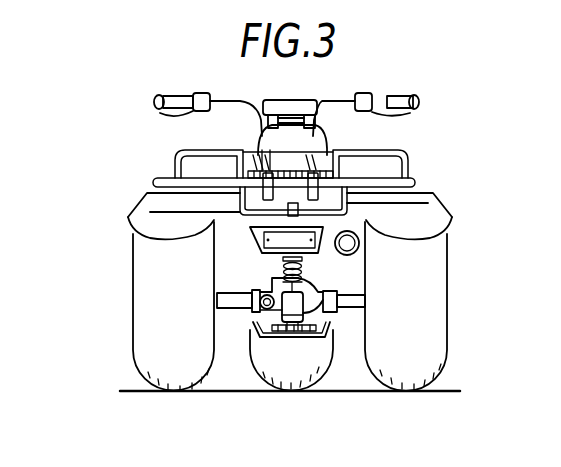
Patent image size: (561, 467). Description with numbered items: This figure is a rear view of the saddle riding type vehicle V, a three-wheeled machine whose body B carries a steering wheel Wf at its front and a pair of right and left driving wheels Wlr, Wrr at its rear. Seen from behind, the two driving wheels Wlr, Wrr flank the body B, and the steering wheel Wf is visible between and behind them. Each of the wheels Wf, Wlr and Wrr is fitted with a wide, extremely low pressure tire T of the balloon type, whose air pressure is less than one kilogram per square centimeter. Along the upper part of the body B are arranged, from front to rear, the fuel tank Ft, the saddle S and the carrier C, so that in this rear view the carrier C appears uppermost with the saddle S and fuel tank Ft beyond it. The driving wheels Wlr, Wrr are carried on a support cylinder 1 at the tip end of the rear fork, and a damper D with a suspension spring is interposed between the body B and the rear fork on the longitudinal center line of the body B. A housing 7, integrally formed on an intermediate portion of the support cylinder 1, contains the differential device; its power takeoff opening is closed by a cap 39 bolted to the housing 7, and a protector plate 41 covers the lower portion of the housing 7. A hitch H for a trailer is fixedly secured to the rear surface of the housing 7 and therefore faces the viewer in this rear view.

The support cylinder 1 is at (228, 299).
The housing 7 is at (307, 295).
The cap 39 is at (268, 307).
The protector plate 41 is at (317, 343).
The body B is at (345, 207).
The carrier C is at (183, 165).
The damper D is at (273, 268).
The fuel tank Ft is at (260, 143).
The hitch H is at (292, 331).
The saddle S is at (300, 168).
The tire T is at (273, 380).
The saddle riding type vehicle V is at (438, 139).
The steering wheel Wf is at (293, 391).
The left driving wheel Wlr is at (133, 337).
The right driving wheel Wrr is at (448, 297).